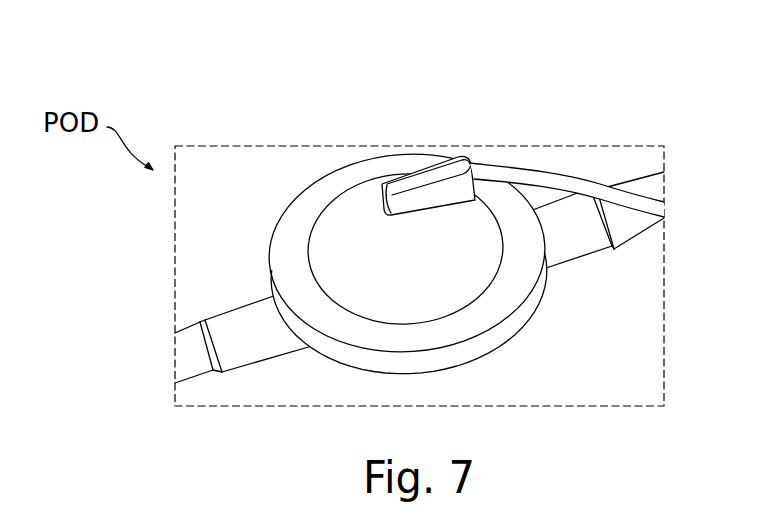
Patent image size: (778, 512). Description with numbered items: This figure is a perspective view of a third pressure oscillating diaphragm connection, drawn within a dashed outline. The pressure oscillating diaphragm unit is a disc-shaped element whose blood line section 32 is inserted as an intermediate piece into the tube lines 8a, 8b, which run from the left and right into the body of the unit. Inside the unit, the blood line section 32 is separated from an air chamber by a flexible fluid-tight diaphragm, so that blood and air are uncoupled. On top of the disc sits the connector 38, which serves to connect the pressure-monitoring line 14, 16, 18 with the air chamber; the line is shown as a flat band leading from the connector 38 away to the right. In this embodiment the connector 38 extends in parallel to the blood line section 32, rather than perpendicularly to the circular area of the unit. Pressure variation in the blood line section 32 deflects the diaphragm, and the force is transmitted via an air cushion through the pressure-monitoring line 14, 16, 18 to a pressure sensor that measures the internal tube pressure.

The tube line 8a is at (416, 325).
The tube line 8b is at (177, 385).
The blood line section 32 is at (242, 320).
The connector 38 is at (426, 171).
The pressure-monitoring line 14 is at (550, 137).
The pressure-monitoring line 16 is at (550, 137).
The pressure-monitoring line 18 is at (553, 178).